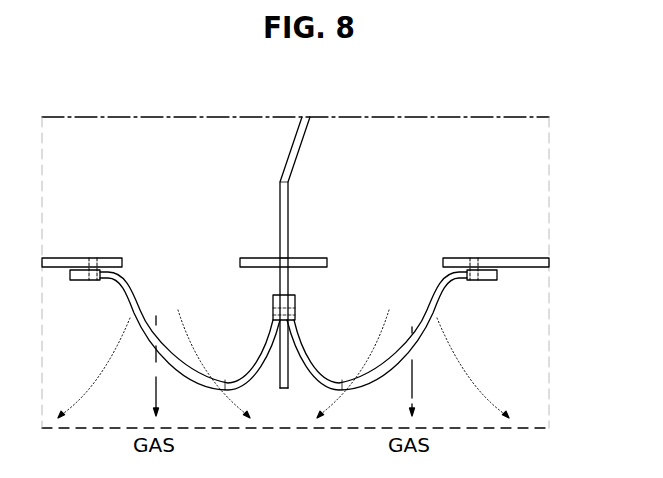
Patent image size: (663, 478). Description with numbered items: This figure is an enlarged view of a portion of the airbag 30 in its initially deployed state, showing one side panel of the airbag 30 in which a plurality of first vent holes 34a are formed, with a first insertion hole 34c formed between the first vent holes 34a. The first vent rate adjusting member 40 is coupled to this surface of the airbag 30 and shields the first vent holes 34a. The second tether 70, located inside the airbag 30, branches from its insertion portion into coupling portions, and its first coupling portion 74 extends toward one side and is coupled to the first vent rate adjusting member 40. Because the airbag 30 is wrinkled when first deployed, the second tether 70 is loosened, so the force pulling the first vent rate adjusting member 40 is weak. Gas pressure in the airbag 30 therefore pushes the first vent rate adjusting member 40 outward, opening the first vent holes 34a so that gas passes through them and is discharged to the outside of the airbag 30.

The airbag 30 is at (67, 258).
The first vent holes 34a is at (170, 262).
The first insertion hole 34c is at (278, 263).
The first vent rate adjusting member 40 is at (143, 330).
The second tether 70 is at (312, 163).
The first coupling portion 74 is at (283, 230).